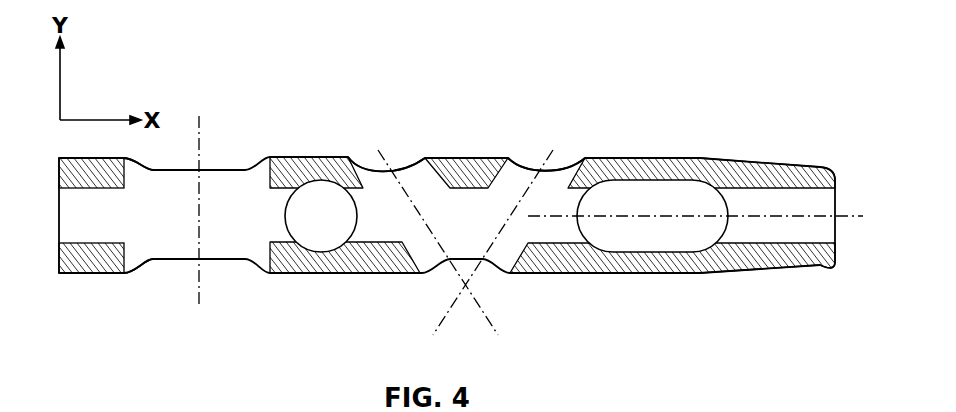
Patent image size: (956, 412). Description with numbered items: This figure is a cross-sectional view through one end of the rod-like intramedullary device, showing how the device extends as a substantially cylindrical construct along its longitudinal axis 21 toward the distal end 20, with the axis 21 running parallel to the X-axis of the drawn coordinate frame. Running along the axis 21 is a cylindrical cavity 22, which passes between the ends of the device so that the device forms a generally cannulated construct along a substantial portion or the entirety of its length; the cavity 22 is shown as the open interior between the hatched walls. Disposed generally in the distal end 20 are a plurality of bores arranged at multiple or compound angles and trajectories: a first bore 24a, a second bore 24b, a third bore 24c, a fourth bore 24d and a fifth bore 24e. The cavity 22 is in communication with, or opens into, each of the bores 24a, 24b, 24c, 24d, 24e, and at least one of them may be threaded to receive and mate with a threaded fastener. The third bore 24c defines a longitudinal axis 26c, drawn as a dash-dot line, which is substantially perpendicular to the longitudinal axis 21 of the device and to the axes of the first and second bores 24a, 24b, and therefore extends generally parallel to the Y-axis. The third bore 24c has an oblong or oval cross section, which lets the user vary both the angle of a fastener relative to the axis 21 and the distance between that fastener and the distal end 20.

The distal end 20 is at (837, 243).
The longitudinal axis 21 is at (849, 214).
The cylindrical cavity 22 is at (89, 243).
The first bore 24a is at (292, 234).
The second bore 24b is at (632, 248).
The third bore 24c is at (126, 172).
The fourth bore 24d is at (358, 168).
The fifth bore 24e is at (578, 164).
The longitudinal axis of third bore 26c is at (197, 277).